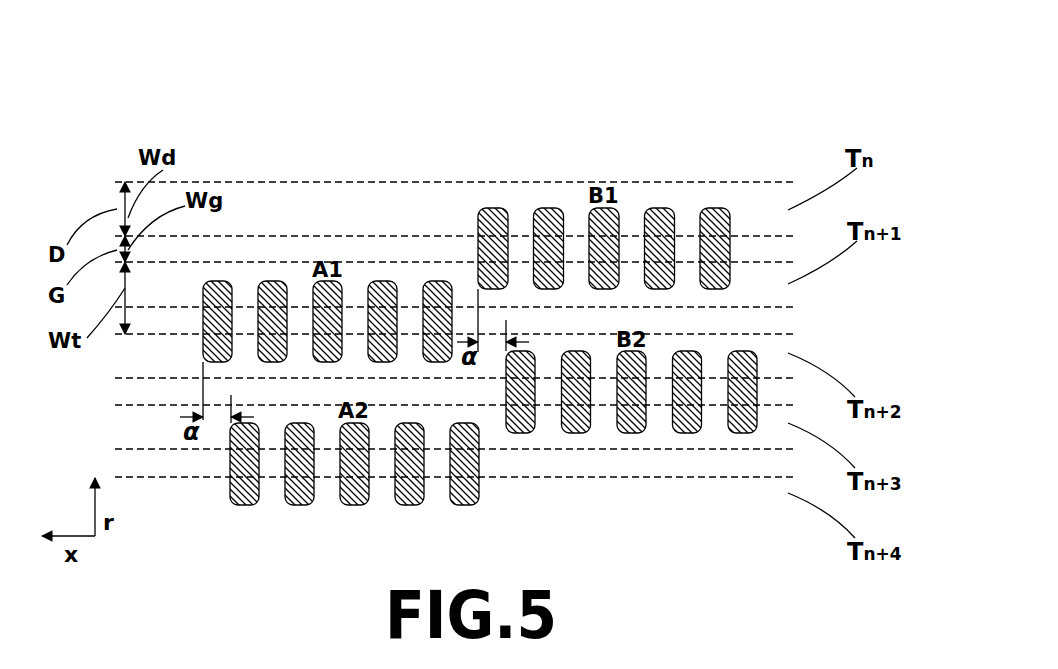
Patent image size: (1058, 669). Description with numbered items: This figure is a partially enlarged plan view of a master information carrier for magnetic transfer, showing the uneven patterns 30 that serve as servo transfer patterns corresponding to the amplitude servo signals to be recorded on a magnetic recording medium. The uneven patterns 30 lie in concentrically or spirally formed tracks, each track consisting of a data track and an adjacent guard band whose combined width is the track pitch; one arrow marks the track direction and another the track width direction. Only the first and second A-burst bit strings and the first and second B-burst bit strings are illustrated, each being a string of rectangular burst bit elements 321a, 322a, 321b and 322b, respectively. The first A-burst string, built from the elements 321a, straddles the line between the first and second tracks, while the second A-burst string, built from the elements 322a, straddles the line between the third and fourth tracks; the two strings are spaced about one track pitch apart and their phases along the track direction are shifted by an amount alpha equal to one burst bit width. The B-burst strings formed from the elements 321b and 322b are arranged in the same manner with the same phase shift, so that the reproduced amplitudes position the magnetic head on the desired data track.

The uneven patterns 30 is at (801, 72).
The rectangular burst bit elements 321a is at (218, 286).
The rectangular burst bit elements 321b is at (711, 212).
The rectangular burst bit elements 322a is at (290, 500).
The rectangular burst bit elements 322b is at (740, 427).